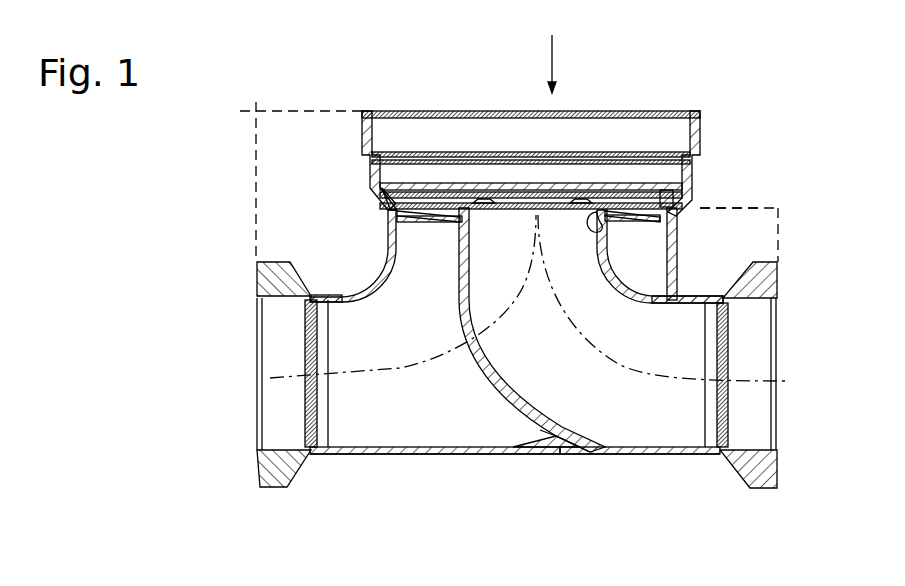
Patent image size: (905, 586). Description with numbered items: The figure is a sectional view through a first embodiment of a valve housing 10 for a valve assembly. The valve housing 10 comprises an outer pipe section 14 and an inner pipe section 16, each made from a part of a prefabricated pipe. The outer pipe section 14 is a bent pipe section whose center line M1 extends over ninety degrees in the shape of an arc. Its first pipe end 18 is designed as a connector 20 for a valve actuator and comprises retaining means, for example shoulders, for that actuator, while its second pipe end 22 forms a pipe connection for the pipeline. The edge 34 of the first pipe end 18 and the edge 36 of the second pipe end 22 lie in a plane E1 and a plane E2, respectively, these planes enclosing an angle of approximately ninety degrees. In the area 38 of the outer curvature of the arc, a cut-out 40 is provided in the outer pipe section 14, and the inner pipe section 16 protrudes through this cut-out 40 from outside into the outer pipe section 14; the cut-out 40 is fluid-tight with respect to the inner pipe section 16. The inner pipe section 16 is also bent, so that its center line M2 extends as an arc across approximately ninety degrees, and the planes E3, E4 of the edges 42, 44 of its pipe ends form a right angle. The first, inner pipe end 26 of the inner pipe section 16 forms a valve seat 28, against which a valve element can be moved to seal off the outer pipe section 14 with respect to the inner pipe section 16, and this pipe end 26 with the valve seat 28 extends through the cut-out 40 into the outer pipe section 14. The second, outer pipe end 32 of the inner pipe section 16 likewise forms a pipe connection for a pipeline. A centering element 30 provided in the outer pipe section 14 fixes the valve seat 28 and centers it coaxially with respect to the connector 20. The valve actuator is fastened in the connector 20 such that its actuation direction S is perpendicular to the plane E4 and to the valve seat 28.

The valve housing 10 is at (514, 292).
The outer pipe section 14 is at (440, 456).
The inner pipe section 16 is at (645, 455).
The first pipe end 18 is at (698, 110).
The connector 20 is at (553, 153).
The second pipe end 22 is at (258, 450).
The first pipe end 26 is at (600, 222).
The valve seat 28 is at (518, 208).
The centering element 30 is at (653, 207).
The second pipe end 32 is at (774, 450).
The edge 34 is at (257, 283).
The edge 36 is at (368, 110).
The area of the outer curvature 38 is at (522, 462).
The cut-out 40 is at (560, 436).
The edge 42 is at (778, 278).
The edge 44 is at (452, 215).
The plane E1 is at (256, 190).
The plane E2 is at (328, 110).
The plane E3 is at (778, 222).
The plane E4 is at (740, 207).
The center line M1 is at (388, 375).
The center line M2 is at (784, 380).
The actuation direction S is at (553, 46).